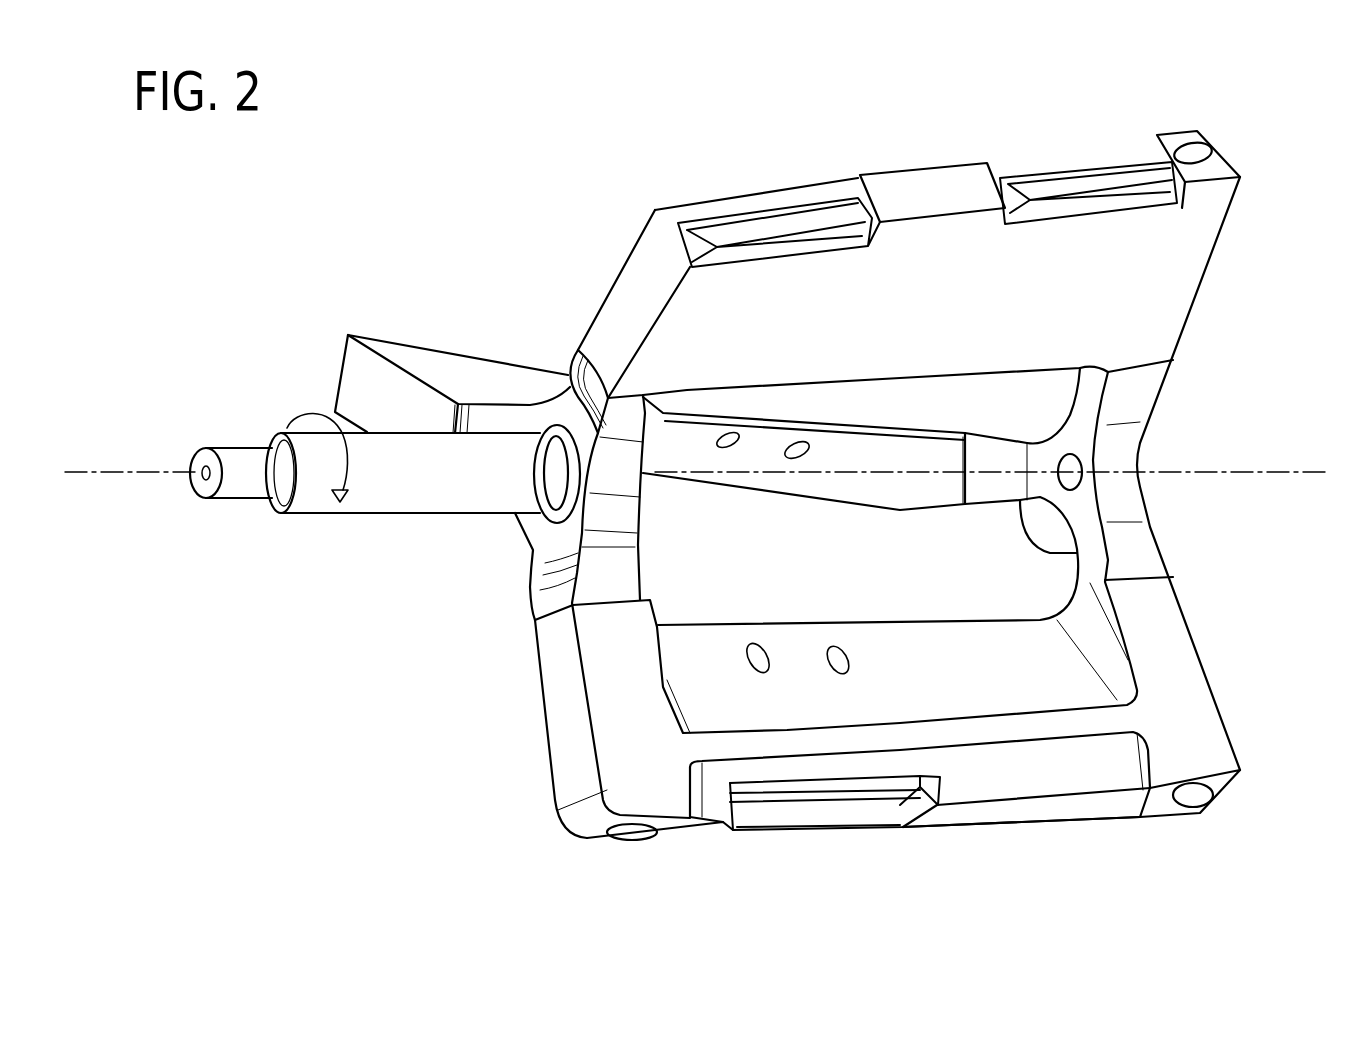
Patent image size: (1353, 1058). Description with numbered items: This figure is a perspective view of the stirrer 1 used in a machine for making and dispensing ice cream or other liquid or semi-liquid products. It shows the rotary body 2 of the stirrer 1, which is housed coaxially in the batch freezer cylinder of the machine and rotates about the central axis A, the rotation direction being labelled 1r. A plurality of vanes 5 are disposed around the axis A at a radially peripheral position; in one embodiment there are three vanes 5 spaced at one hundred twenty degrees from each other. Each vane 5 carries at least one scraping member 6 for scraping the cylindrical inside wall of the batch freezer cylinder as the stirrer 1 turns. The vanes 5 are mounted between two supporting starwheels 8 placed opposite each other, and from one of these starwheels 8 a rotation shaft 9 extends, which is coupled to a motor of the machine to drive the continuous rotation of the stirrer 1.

The stirrer 1 is at (976, 133).
The rotary body 2 is at (1240, 387).
The vane 5 is at (918, 182).
The scraping member 6 is at (787, 205).
The supporting starwheel 8 is at (1013, 492).
The rotation shaft 9 is at (243, 452).
The rotation direction 1r is at (360, 518).
The central axis A is at (170, 472).